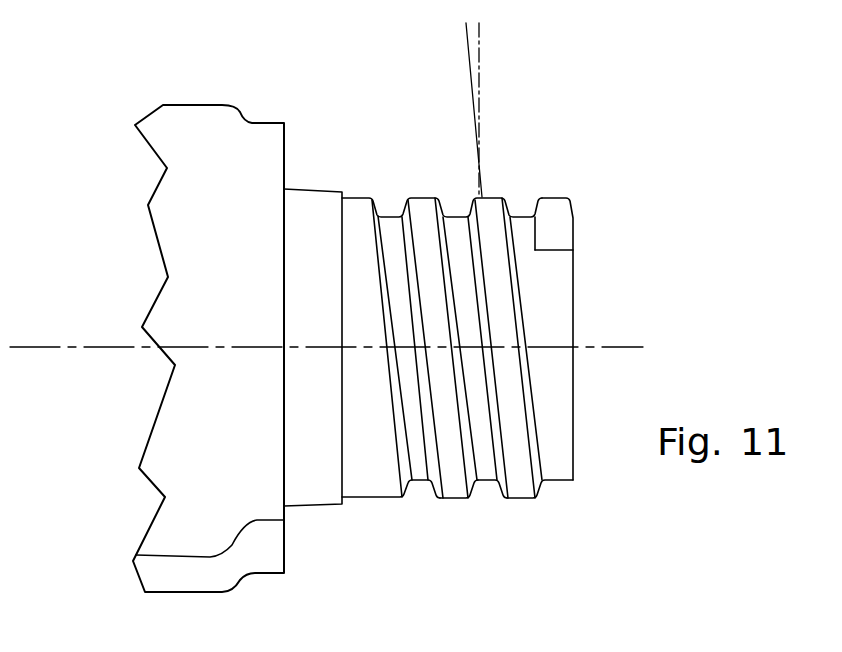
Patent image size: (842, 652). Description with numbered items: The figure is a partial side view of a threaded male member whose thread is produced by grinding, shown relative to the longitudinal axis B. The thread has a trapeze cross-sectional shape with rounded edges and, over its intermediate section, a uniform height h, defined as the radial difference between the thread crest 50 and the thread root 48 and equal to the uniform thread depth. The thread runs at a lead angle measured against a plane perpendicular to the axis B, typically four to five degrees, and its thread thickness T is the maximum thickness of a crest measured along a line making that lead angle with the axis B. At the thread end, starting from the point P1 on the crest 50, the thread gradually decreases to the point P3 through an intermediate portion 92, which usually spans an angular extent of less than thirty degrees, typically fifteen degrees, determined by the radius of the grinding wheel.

The intermediate portion 92 is at (555, 225).
The thread crest 50 is at (453, 500).
The thread root 48 is at (485, 482).
The point P1 is at (565, 196).
The point P3 is at (555, 250).
The axis B is at (79, 347).
The thread thickness T is at (525, 400).
The uniform height h is at (422, 440).